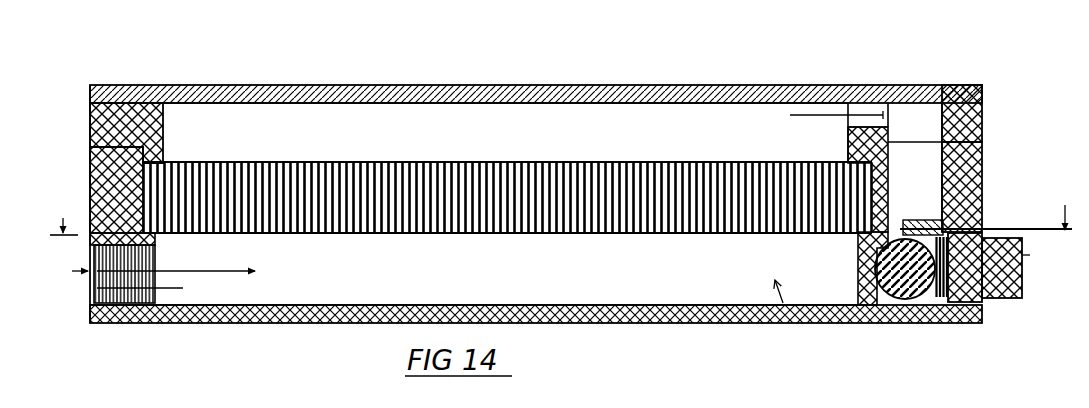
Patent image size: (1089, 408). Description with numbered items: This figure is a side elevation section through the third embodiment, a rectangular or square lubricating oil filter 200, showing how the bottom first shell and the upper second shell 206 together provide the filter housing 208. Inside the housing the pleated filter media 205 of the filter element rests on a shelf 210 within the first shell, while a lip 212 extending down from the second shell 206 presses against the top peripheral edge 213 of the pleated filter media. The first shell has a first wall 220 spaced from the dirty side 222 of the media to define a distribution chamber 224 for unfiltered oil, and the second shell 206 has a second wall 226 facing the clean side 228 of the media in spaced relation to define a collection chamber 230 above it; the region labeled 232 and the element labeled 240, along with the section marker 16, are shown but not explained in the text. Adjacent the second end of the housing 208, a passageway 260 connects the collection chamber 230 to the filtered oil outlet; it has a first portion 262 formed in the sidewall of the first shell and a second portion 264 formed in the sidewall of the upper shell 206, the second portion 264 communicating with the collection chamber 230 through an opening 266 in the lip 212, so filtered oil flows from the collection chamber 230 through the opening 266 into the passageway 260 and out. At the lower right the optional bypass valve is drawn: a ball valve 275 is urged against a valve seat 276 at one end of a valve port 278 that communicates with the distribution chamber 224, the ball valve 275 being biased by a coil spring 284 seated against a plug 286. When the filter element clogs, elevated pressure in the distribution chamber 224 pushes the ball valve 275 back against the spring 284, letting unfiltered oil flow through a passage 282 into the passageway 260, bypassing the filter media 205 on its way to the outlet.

The lubricating oil filter 200 is at (217, 79).
The second shell 206 is at (358, 103).
The second wall 226 is at (357, 104).
The lip 212 is at (173, 170).
The top peripheral edge 213 is at (840, 162).
The collection chamber 230 is at (573, 137).
The upper passage 232 is at (617, 129).
The clean side 228 is at (729, 162).
The pleated filter media 205 is at (474, 130).
The dirty side 222 is at (695, 233).
The inlet mesh 240 is at (159, 256).
The section line 16- 16 is at (559, 216).
The distribution chamber 224 is at (577, 279).
The first wall 220 is at (520, 303).
The filter housing 208 is at (728, 280).
The shelf 210 is at (805, 235).
The opening 266 is at (870, 103).
The passageway 260 is at (882, 116).
The second portion 264 is at (959, 61).
The first portion 262 is at (961, 146).
The passage 282 is at (900, 223).
The coil spring 284 is at (991, 251).
The plug 286 is at (1007, 300).
The valve seat 276 is at (870, 291).
The ball valve 275 is at (876, 258).
The valve port 278 is at (878, 280).